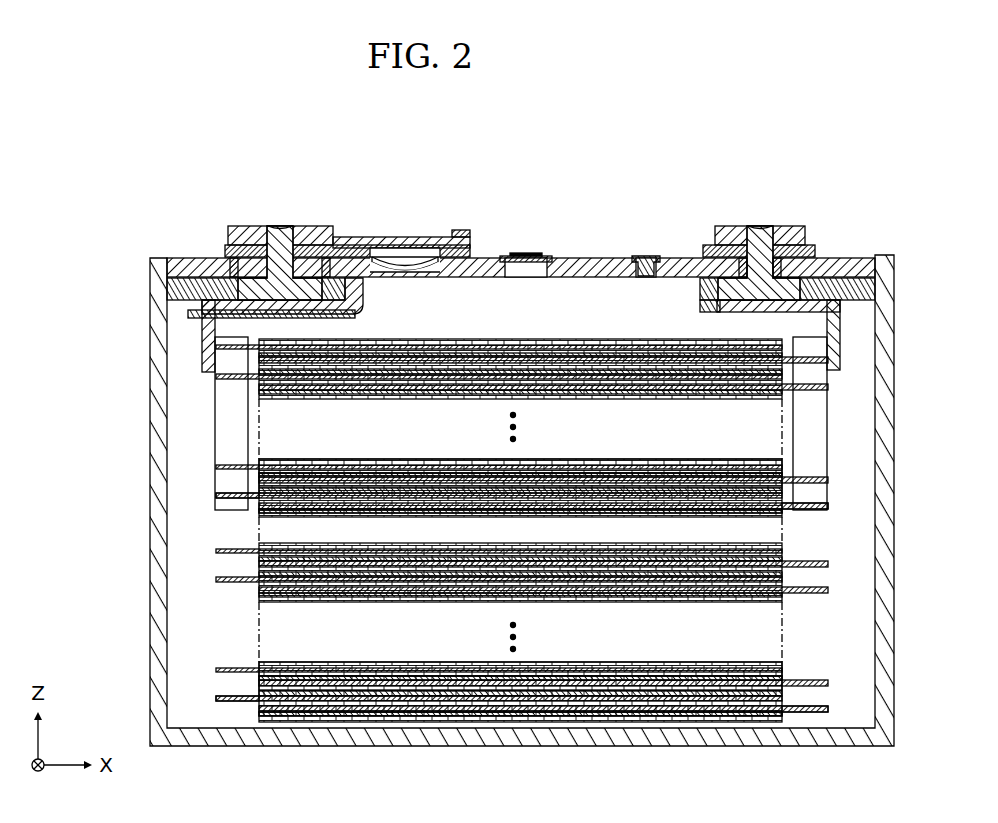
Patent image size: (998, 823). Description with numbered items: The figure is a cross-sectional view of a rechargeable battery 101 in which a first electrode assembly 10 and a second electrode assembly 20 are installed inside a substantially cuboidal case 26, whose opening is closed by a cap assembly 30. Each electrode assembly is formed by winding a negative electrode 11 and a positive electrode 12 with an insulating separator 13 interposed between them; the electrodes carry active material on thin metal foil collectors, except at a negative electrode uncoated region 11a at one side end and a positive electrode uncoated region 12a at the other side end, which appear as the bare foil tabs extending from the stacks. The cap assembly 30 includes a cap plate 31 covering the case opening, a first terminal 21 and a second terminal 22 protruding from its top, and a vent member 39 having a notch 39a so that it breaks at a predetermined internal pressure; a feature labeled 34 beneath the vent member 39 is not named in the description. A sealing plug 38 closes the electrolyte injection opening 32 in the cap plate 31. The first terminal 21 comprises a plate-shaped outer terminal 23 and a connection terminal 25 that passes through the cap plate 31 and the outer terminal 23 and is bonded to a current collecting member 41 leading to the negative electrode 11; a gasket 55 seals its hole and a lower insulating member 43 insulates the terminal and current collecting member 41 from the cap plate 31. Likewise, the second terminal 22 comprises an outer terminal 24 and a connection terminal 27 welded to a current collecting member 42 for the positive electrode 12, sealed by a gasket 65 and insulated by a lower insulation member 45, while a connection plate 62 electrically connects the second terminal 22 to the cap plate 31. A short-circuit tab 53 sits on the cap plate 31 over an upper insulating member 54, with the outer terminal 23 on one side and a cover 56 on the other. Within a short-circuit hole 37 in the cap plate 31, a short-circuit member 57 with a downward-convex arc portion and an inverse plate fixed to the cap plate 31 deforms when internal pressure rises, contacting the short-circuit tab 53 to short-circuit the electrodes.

The rechargeable battery 101 is at (534, 107).
The first electrode assembly 10 is at (588, 326).
The second electrode assembly 20 is at (608, 730).
The negative electrode 11 is at (310, 483).
The negative electrode uncoated region 11a is at (233, 482).
The positive electrode 12 is at (765, 490).
The positive electrode uncoated region 12a is at (823, 490).
The separator 13 is at (757, 508).
The first terminal 21 is at (298, 162).
The second terminal 22 is at (745, 167).
The outer terminal 23 is at (248, 226).
The outer terminal 24 is at (788, 226).
The connection terminal 25 is at (283, 226).
The case 26 is at (885, 620).
The connection terminal 27 is at (758, 226).
The cap assembly 30 is at (492, 250).
The cap plate 31 is at (193, 259).
The electrolyte injection opening 32 is at (645, 276).
The vent hole 34 is at (535, 276).
The short-circuit hole 37 is at (378, 252).
The sealing plug 38 is at (645, 256).
The vent member 39 is at (548, 256).
The notch 39a is at (520, 253).
The current collecting member 41 is at (208, 362).
The current collecting member 42 is at (838, 350).
The lower insulating member 43 is at (170, 290).
The lower insulation member 45 is at (872, 292).
The short-circuit tab 53 is at (347, 243).
The upper insulating member 54 is at (466, 230).
The gasket 55 is at (224, 260).
The cover 56 is at (418, 237).
The short-circuit member 57 is at (420, 270).
The connection plate 62 is at (810, 245).
The gasket 65 is at (737, 262).